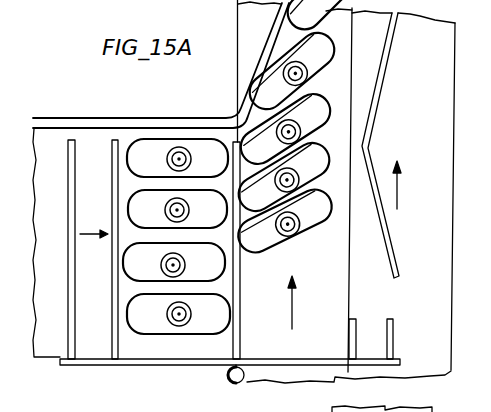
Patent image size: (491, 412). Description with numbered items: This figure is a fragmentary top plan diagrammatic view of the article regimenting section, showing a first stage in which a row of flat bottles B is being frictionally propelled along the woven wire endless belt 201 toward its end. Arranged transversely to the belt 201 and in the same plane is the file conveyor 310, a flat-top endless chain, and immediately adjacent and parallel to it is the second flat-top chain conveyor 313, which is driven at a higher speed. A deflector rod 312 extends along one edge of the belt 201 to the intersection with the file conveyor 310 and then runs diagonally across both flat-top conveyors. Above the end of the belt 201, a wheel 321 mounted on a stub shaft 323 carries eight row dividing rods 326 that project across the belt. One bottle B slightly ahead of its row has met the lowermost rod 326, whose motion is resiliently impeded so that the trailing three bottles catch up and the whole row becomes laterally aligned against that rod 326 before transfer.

The woven wire endless belt 201 is at (48, 345).
The deflector rod 312 is at (270, 31).
The row dividing rods 326 is at (113, 311).
The file conveyor 310 is at (328, 311).
The second flat-top chain conveyor 313 is at (417, 314).
The wheel 321 is at (139, 362).
The stub shaft 323 is at (228, 379).
The bottles B is at (278, 242).